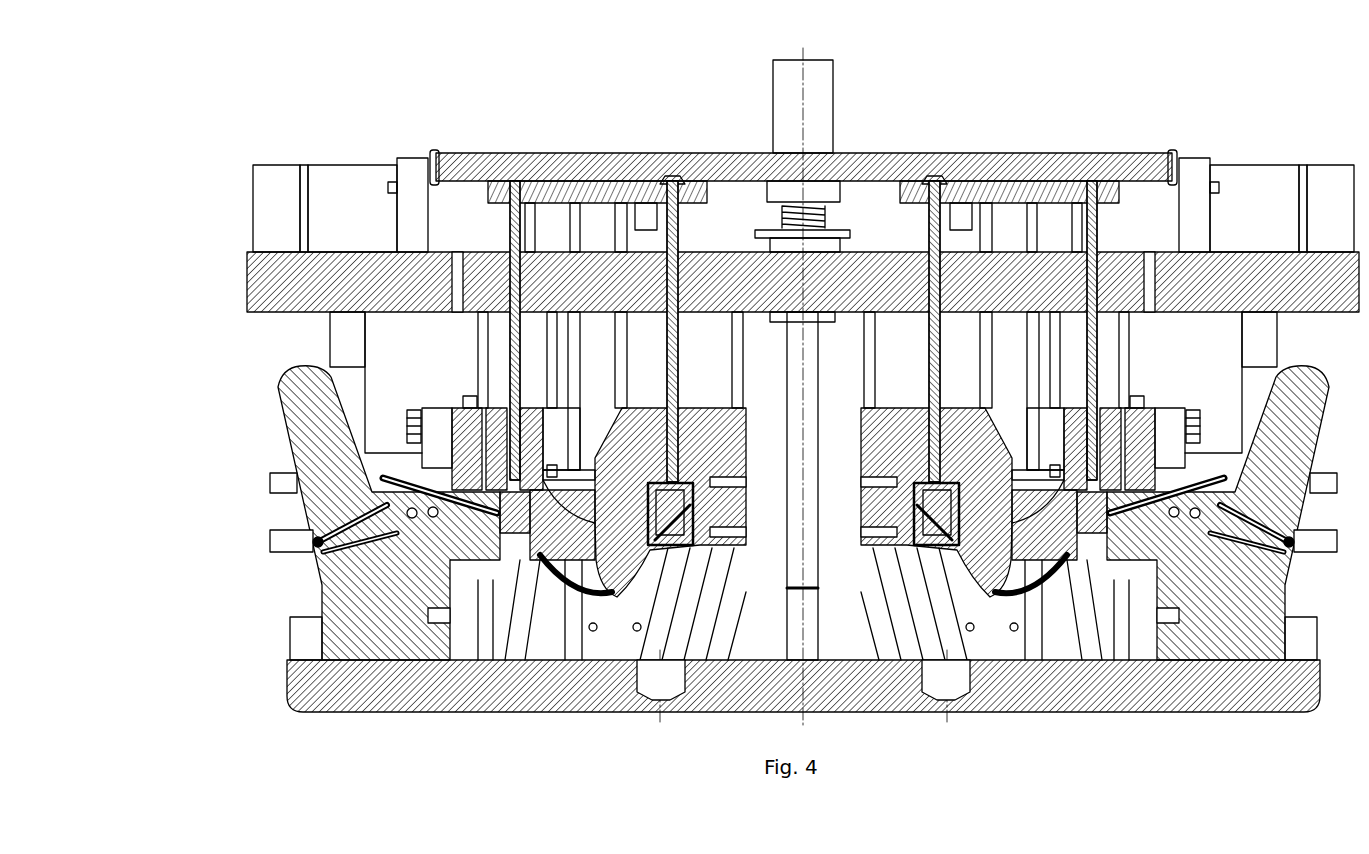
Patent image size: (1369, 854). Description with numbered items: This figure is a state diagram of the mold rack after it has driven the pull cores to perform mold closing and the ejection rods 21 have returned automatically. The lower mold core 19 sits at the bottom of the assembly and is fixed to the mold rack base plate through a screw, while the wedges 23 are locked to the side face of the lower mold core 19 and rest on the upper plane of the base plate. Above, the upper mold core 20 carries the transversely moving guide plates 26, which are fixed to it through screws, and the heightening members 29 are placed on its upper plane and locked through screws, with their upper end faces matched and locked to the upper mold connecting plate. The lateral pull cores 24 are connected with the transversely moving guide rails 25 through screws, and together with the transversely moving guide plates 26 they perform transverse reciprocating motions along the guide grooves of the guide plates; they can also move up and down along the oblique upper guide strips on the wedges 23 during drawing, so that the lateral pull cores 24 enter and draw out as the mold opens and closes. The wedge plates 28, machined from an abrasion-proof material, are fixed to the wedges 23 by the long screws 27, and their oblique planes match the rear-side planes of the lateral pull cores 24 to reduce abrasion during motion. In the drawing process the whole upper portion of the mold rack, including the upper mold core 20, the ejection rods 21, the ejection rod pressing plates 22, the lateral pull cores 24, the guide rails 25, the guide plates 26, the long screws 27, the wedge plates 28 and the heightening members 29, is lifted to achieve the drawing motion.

The lower mold core 19 is at (403, 412).
The upper mold core 20 is at (593, 525).
The ejection rods 21 is at (596, 412).
The ejection rod pressing plates 22 is at (640, 340).
The wedges 23 is at (282, 403).
The lateral pull cores 24 is at (293, 477).
The transversely moving guide rails 25 is at (303, 495).
The transversely moving guide plates 26 is at (295, 523).
The long screws 27 is at (277, 537).
The wedge plates 28 is at (323, 580).
The heightening members 29 is at (647, 337).